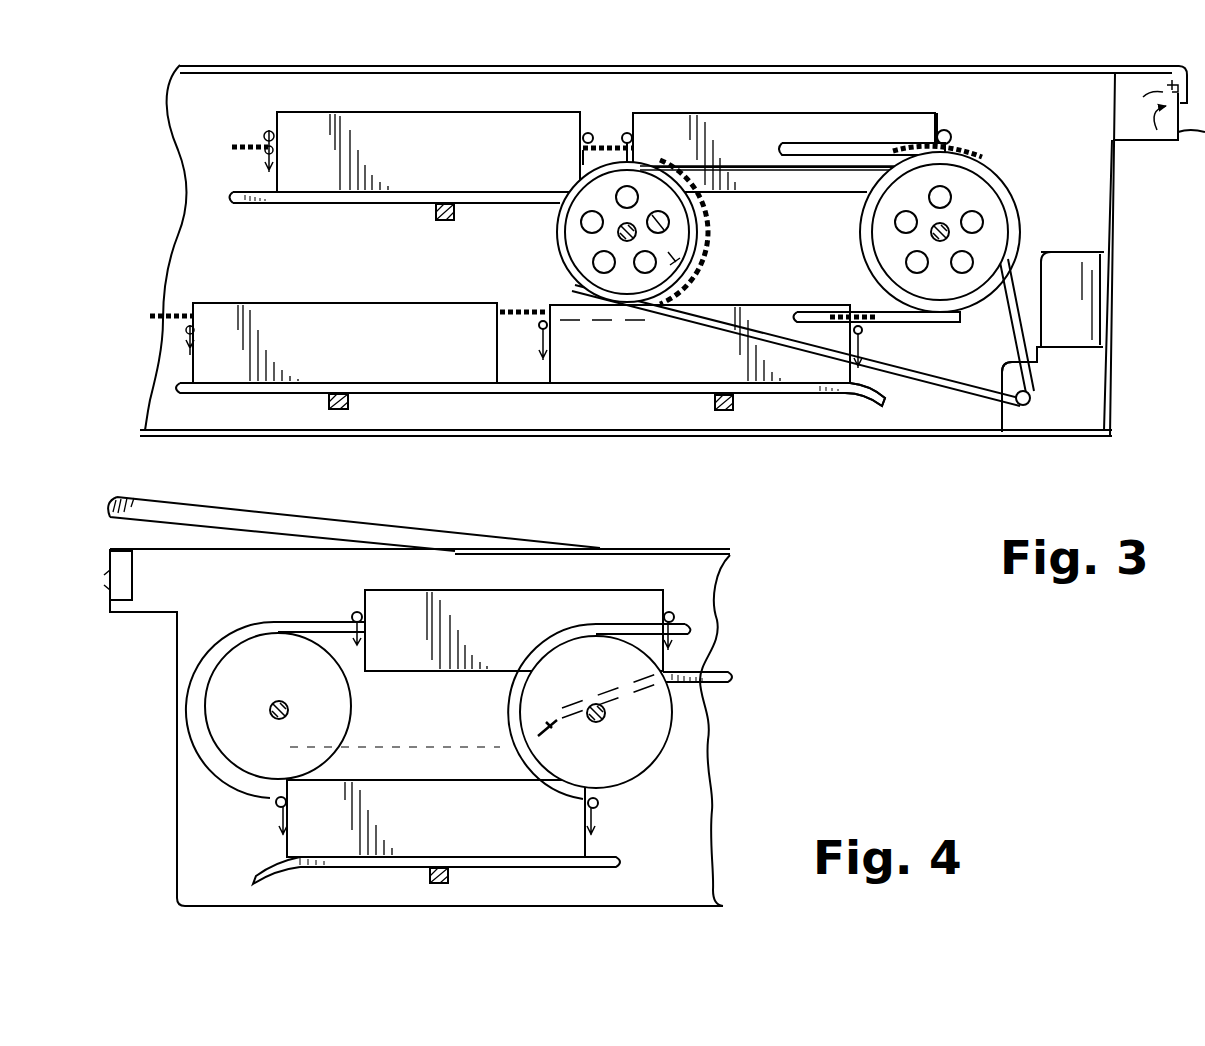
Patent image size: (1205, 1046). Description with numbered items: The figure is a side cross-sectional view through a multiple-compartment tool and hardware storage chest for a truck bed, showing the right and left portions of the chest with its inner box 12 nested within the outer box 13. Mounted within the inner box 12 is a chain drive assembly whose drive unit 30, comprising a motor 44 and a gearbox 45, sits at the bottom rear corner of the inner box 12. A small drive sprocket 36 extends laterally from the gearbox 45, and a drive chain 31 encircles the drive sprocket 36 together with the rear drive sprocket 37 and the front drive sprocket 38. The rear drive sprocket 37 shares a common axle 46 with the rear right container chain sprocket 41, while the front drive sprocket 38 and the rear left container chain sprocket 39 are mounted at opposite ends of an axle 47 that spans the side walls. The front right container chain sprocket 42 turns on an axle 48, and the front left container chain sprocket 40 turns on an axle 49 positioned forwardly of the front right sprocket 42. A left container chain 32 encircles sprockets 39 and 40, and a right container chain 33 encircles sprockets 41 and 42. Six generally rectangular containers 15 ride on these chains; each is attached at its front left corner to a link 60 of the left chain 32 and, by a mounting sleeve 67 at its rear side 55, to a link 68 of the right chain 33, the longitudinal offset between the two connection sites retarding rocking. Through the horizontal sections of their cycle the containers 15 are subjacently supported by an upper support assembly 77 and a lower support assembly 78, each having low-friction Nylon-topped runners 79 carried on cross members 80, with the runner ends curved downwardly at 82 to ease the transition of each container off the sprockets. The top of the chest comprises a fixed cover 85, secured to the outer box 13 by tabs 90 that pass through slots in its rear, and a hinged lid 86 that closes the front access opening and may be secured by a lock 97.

In FIG. 3, the inner box 12 is at (928, 433).
In FIG. 3, the outer box 13 is at (864, 437).
In FIG. 3, the containers 15 is at (400, 140).
In FIG. 4, the containers 15 is at (495, 622).
In FIG. 3, the drive unit 30 is at (1096, 249).
In FIG. 3, the drive chain 31 is at (978, 401).
In FIG. 3, the left container chain 32 is at (251, 140).
In FIG. 3, the right container chain 33 is at (820, 143).
In FIG. 3, the drive sprocket 36 is at (1032, 400).
In FIG. 3, the rear drive sprocket 37 is at (965, 192).
In FIG. 3, the front drive sprocket 38 is at (690, 205).
In FIG. 3, the rear left side container chain sprocket 39 is at (706, 240).
In FIG. 4, the front left side container chain sprocket 40 is at (205, 716).
In FIG. 3, the rear right side container chain sprocket 41 is at (1005, 198).
In FIG. 4, the front right side container chain sprocket 42 is at (663, 725).
In FIG. 3, the motor 44 is at (1100, 278).
In FIG. 3, the gearbox 45 is at (1095, 378).
In FIG. 3, the common axle 46 is at (932, 234).
In FIG. 3, the axle 47 is at (617, 234).
In FIG. 4, the axle 48 is at (603, 720).
In FIG. 4, the axle 49 is at (290, 712).
In FIG. 3, the rear side 55 is at (942, 132).
In FIG. 3, the link 60 is at (265, 155).
In FIG. 3, the mounting sleeve 67 is at (951, 133).
In FIG. 3, the link 68 is at (962, 150).
In FIG. 3, the upper support assembly 77 is at (324, 205).
In FIG. 3, the lower support assembly 78 is at (310, 398).
In FIG. 3, the runners 79 is at (356, 204).
In FIG. 4, the runners 79 is at (730, 679).
In FIG. 3, the cross members 80 is at (440, 221).
In FIG. 4, the cross members 80 is at (450, 878).
In FIG. 3, the curved runner ends 82 is at (707, 263).
In FIG. 4, the curved runner ends 82 is at (530, 711).
In FIG. 3, the fixed cover 85 is at (555, 65).
In FIG. 4, the fixed cover 85 is at (700, 547).
In FIG. 4, the lid 86 is at (520, 536).
In FIG. 3, the tabs 90 is at (1143, 97).
In FIG. 4, the lock 97 is at (112, 576).